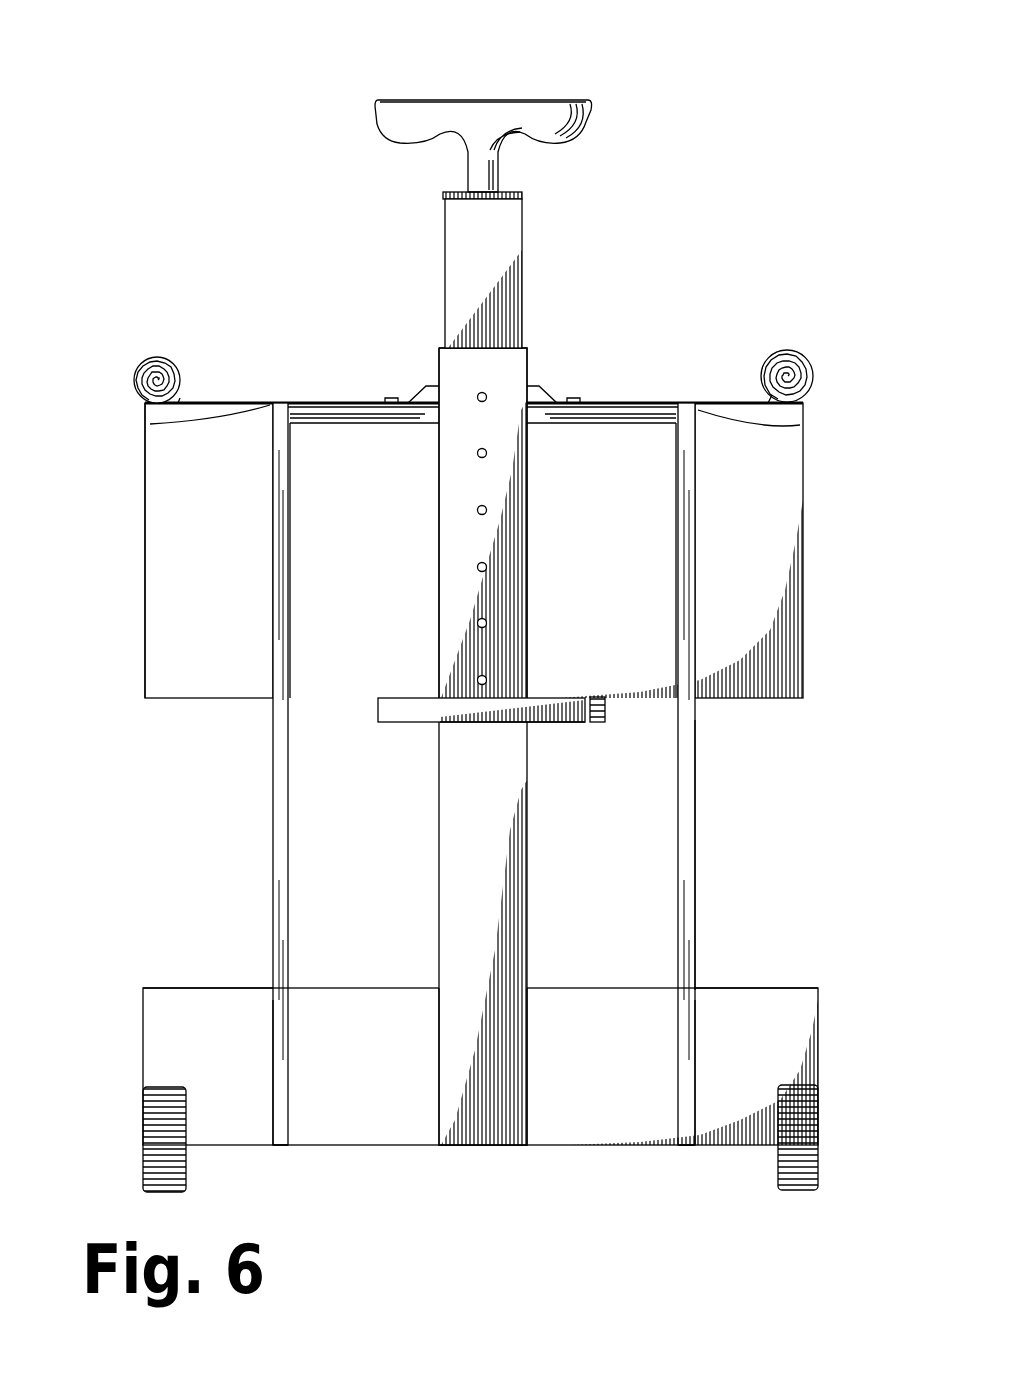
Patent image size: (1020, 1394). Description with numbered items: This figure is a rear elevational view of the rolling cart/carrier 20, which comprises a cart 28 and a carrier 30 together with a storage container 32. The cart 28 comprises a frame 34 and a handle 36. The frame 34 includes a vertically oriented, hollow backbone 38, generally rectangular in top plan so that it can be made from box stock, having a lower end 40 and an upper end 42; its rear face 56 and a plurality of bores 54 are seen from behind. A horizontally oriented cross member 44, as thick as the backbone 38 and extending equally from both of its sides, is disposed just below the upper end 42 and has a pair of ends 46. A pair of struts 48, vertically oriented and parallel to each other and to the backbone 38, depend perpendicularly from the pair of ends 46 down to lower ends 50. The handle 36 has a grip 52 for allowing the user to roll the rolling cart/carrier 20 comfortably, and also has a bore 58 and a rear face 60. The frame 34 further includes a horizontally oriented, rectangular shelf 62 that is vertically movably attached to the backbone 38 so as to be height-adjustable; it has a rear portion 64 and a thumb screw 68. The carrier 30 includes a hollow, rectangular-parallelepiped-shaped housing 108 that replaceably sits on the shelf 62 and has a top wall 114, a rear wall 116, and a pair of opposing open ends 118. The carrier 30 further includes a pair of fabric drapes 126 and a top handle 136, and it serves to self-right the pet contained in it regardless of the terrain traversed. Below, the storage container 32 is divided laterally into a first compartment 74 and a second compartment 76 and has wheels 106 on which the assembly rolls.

The rolling cart/carrier 20 is at (127, 172).
The cart 28 is at (392, 99).
The carrier 30 is at (230, 398).
The storage container 32 is at (808, 665).
The frame 34 is at (708, 728).
The handle 36 is at (539, 99).
The backbone 38 is at (438, 870).
The lower end 40 is at (483, 1146).
The upper end 42 is at (472, 338).
The cross member 44 is at (352, 425).
The pair of ends 46 is at (268, 407).
The pair of struts 48 is at (290, 556).
The lower ends 50 is at (280, 1146).
The grip 52 is at (484, 99).
The plurality of bores 54 is at (490, 453).
The rear face 56 is at (500, 365).
The bore 58 is at (490, 505).
The rear face 60 is at (486, 244).
The shelf 62 is at (541, 723).
The rear portion 64 is at (412, 710).
The thumb screw 68 is at (607, 706).
The first compartment 74 is at (214, 986).
The second compartment 76 is at (750, 986).
The wheels 106 is at (140, 1170).
The housing 108 is at (687, 399).
The top wall 114 is at (282, 400).
The rear wall 116 is at (185, 520).
The pair of opposing open ends 118 is at (805, 515).
The pair of fabric drapes 126 is at (129, 383).
The top handle 136 is at (414, 394).